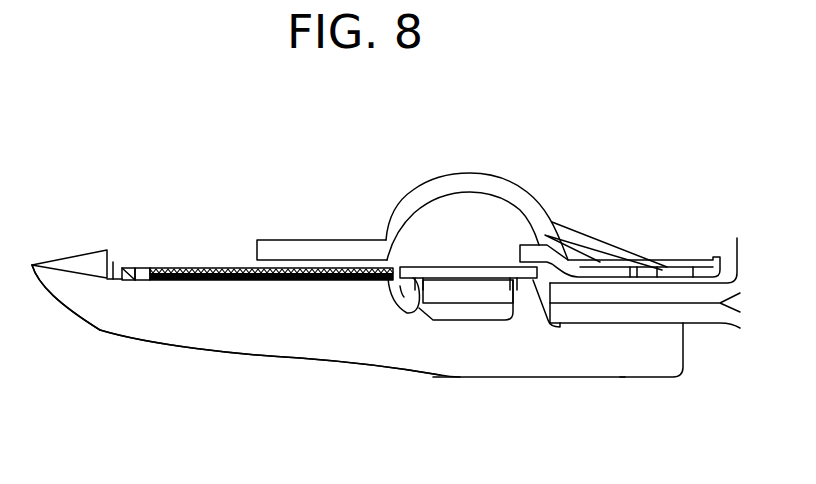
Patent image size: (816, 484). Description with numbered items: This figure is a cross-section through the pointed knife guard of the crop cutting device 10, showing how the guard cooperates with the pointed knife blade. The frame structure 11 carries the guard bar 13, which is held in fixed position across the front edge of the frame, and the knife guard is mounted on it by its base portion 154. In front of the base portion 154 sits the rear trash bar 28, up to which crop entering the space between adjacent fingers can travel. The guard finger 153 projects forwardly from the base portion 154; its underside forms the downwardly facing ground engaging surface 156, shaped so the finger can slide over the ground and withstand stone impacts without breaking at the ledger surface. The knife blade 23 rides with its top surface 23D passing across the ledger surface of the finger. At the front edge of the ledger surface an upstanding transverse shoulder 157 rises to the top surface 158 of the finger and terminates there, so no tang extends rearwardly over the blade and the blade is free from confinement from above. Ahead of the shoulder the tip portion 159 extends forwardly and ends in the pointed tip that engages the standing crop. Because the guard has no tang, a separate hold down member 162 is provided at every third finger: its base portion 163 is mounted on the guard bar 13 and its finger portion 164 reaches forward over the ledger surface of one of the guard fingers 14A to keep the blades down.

The crop cutting device 10 is at (540, 143).
The frame structure 11 is at (735, 226).
The guard bar 13 is at (613, 313).
The guard finger 14A is at (205, 326).
The knife blade 23 is at (233, 281).
The top surface 23D is at (173, 283).
The rear trash bar 28 is at (400, 297).
The guard finger 153 is at (312, 347).
The base portion 154 is at (665, 357).
The ground engaging surface 156 is at (433, 377).
The transverse shoulder 157 is at (113, 257).
The top surface 158 is at (88, 243).
The tip portion 159 is at (60, 290).
The hold down member 162 is at (415, 170).
The base portion 163 is at (628, 273).
The finger portion 164 is at (313, 242).